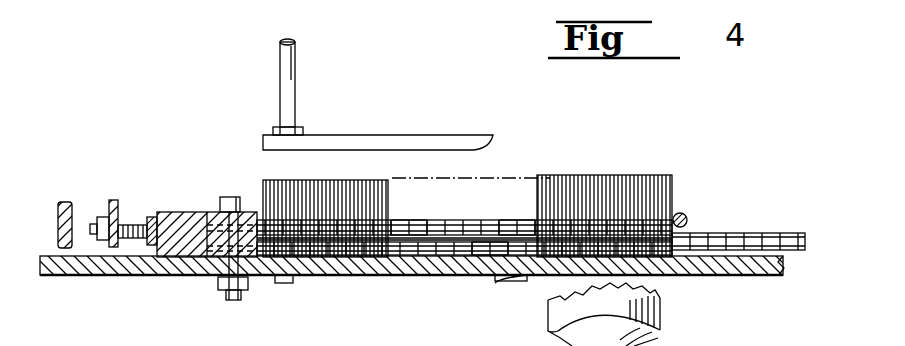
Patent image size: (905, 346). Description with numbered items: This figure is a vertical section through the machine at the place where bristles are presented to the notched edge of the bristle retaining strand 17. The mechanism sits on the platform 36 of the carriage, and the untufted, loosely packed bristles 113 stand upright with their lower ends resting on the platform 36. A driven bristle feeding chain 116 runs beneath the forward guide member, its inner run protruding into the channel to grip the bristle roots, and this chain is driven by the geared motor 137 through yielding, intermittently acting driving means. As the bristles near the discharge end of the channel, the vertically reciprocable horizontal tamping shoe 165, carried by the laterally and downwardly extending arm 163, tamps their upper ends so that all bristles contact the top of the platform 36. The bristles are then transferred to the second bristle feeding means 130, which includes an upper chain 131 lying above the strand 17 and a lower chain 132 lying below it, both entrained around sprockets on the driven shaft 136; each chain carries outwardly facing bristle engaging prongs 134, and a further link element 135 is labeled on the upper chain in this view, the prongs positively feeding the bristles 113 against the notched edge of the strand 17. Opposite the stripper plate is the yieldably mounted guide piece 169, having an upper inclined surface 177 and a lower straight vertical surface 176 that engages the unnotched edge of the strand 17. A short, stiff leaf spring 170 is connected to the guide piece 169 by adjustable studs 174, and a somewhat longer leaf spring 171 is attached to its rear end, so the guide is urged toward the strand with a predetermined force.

The notched strand 17 is at (262, 212).
The platform 36 is at (434, 273).
The bristles 113 is at (634, 177).
The bristle feeding chain 116 is at (751, 233).
The second bristle feeding means 130 is at (478, 222).
The upper chain 131 is at (427, 221).
The lower chain 132 is at (489, 257).
The bristle engaging prongs 134 is at (397, 220).
The chain link 135 is at (513, 220).
The driven shaft 136 is at (510, 280).
The geared motor 137 is at (661, 312).
The arm 163 is at (296, 88).
The tamping shoe 165 is at (446, 134).
The guide piece 169 is at (183, 212).
The leaf spring 170 is at (114, 200).
The leaf spring 171 is at (66, 200).
The studs 174 is at (150, 217).
The lower straight vertically extending surface 176 is at (218, 277).
The upper inclined surface 177 is at (240, 197).